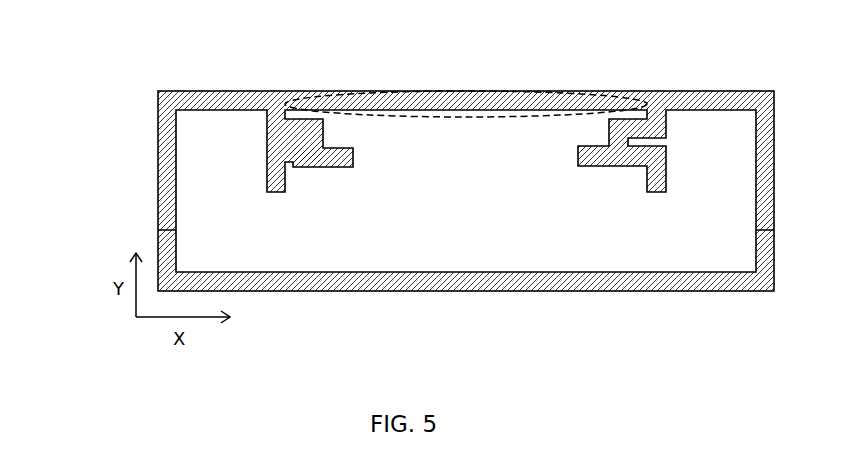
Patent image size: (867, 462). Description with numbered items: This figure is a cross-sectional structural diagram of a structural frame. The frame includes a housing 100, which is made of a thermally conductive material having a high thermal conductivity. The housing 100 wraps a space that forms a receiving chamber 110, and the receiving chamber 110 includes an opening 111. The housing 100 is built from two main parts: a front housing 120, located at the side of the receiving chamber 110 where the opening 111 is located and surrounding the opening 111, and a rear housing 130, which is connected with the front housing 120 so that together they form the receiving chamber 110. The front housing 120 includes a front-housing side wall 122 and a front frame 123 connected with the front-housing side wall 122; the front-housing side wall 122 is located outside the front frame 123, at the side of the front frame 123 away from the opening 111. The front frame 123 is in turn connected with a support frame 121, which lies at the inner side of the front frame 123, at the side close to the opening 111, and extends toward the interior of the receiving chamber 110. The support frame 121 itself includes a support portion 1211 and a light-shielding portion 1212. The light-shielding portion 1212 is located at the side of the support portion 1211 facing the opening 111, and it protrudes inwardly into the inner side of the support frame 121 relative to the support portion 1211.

The housing 100 is at (422, 208).
The rear housing 130 is at (445, 285).
The front housing 120 is at (409, 133).
The support frame 121 is at (305, 114).
The front-housing side wall 122 is at (170, 145).
The front frame 123 is at (240, 100).
The support portion 1211 is at (318, 120).
The light-shielding portion 1212 is at (343, 157).
The receiving chamber 110 is at (487, 170).
The opening 111 is at (507, 100).